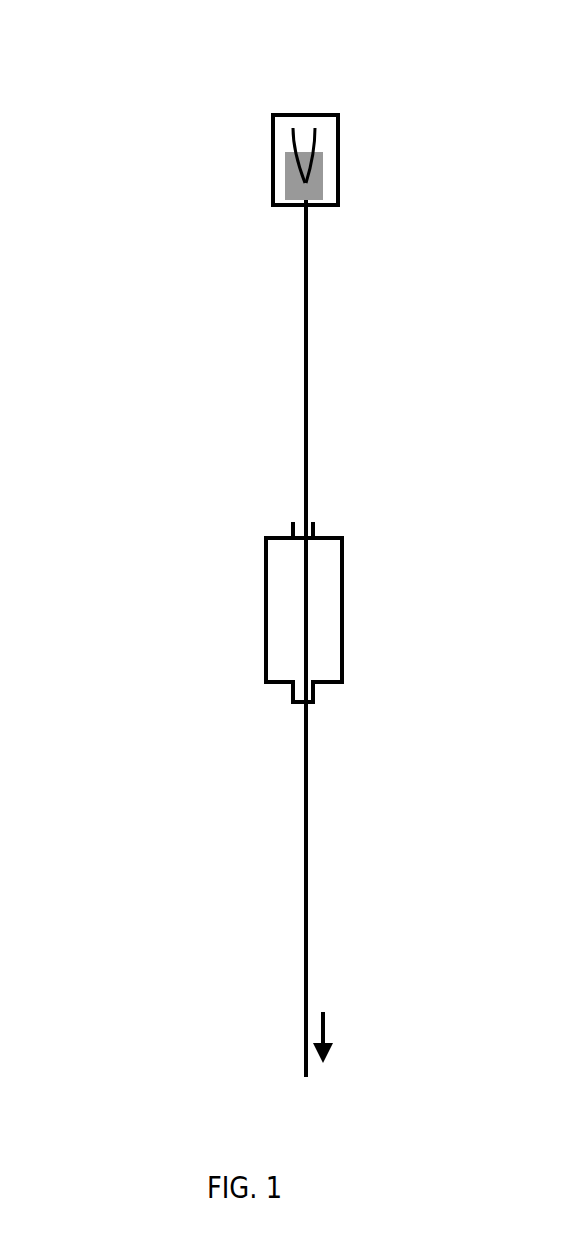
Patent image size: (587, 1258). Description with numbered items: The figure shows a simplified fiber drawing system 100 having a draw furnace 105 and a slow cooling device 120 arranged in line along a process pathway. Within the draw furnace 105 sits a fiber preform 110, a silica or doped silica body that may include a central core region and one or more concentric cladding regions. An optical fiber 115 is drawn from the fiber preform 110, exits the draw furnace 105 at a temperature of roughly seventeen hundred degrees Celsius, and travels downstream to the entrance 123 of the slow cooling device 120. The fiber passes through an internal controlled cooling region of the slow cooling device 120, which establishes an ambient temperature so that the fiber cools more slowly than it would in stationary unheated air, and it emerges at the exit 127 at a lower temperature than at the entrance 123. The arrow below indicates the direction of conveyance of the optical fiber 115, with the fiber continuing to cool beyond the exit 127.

The system 100 is at (178, 102).
The draw furnace 105 is at (273, 143).
The fiber preform 110 is at (314, 134).
The optical fiber 115 is at (306, 328).
The slow cooling device 120 is at (266, 560).
The entrance 123 is at (313, 522).
The exit 127 is at (297, 702).